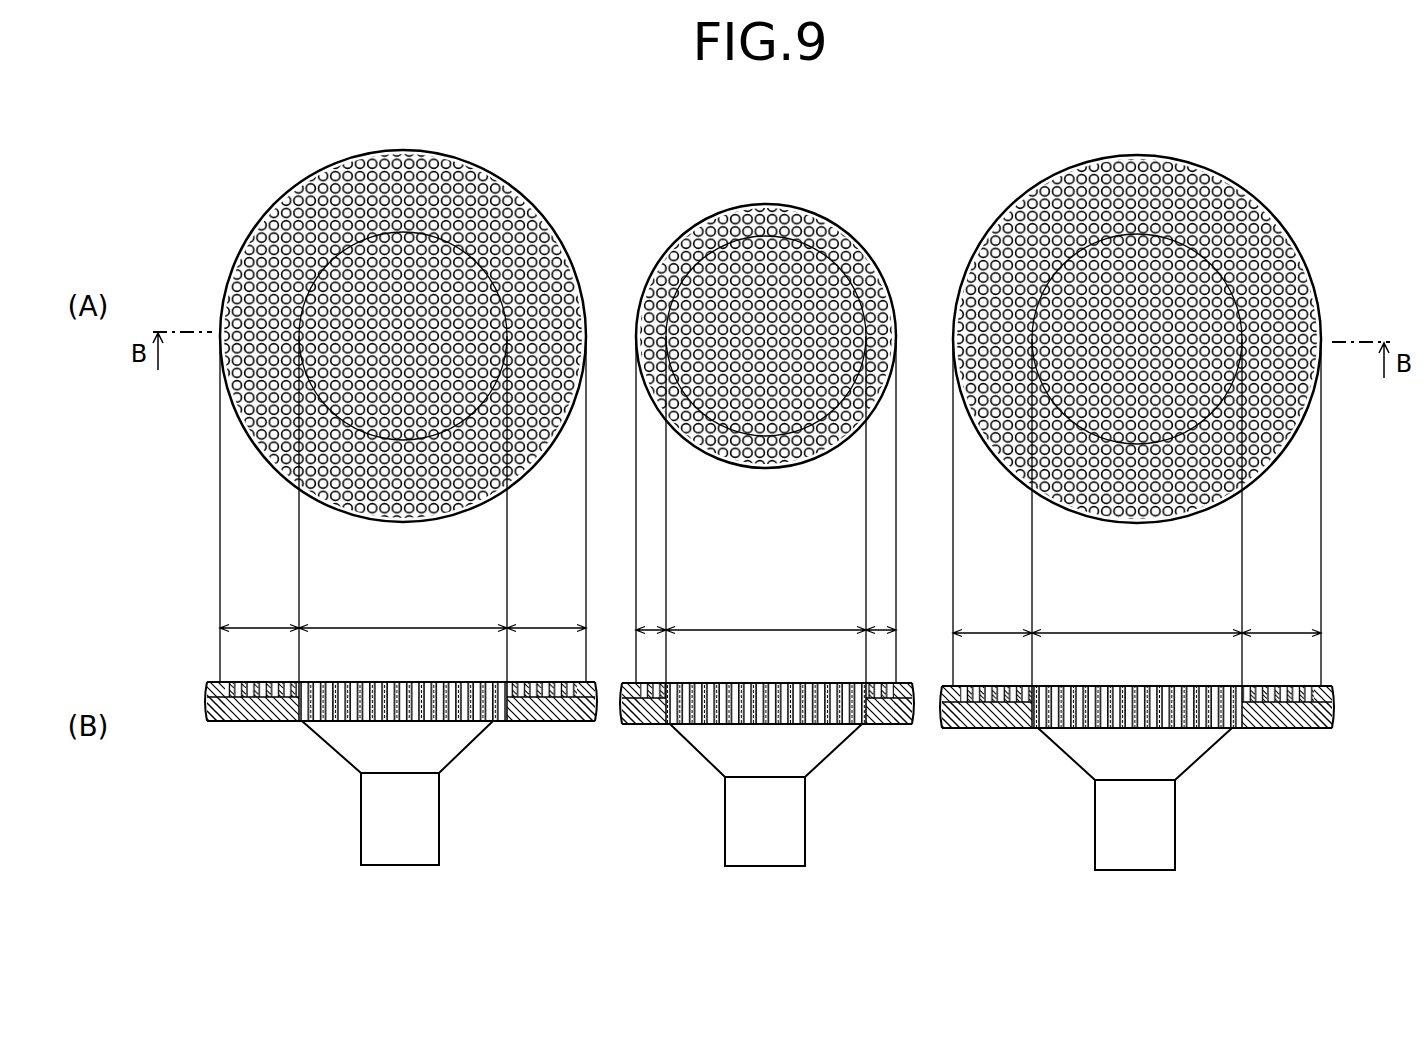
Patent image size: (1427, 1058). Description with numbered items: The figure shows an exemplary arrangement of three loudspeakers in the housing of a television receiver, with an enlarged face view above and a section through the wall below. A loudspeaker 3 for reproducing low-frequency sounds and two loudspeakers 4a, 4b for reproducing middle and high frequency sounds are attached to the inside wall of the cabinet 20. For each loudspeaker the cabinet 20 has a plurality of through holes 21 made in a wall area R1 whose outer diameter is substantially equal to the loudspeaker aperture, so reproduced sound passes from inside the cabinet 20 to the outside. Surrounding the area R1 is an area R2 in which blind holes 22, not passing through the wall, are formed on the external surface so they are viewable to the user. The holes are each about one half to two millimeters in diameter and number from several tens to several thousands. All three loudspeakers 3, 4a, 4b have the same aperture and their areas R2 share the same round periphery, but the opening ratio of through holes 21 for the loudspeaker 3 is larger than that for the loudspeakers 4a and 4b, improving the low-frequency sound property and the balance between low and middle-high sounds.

The cabinet 20 is at (272, 722).
The through holes 21 is at (275, 258).
The blind holes 22 is at (228, 318).
The loudspeaker 3 is at (766, 867).
The loudspeaker 4a is at (403, 866).
The loudspeaker 4b is at (1137, 871).
The wall area R1 is at (1240, 173).
The area R2 is at (1290, 193).